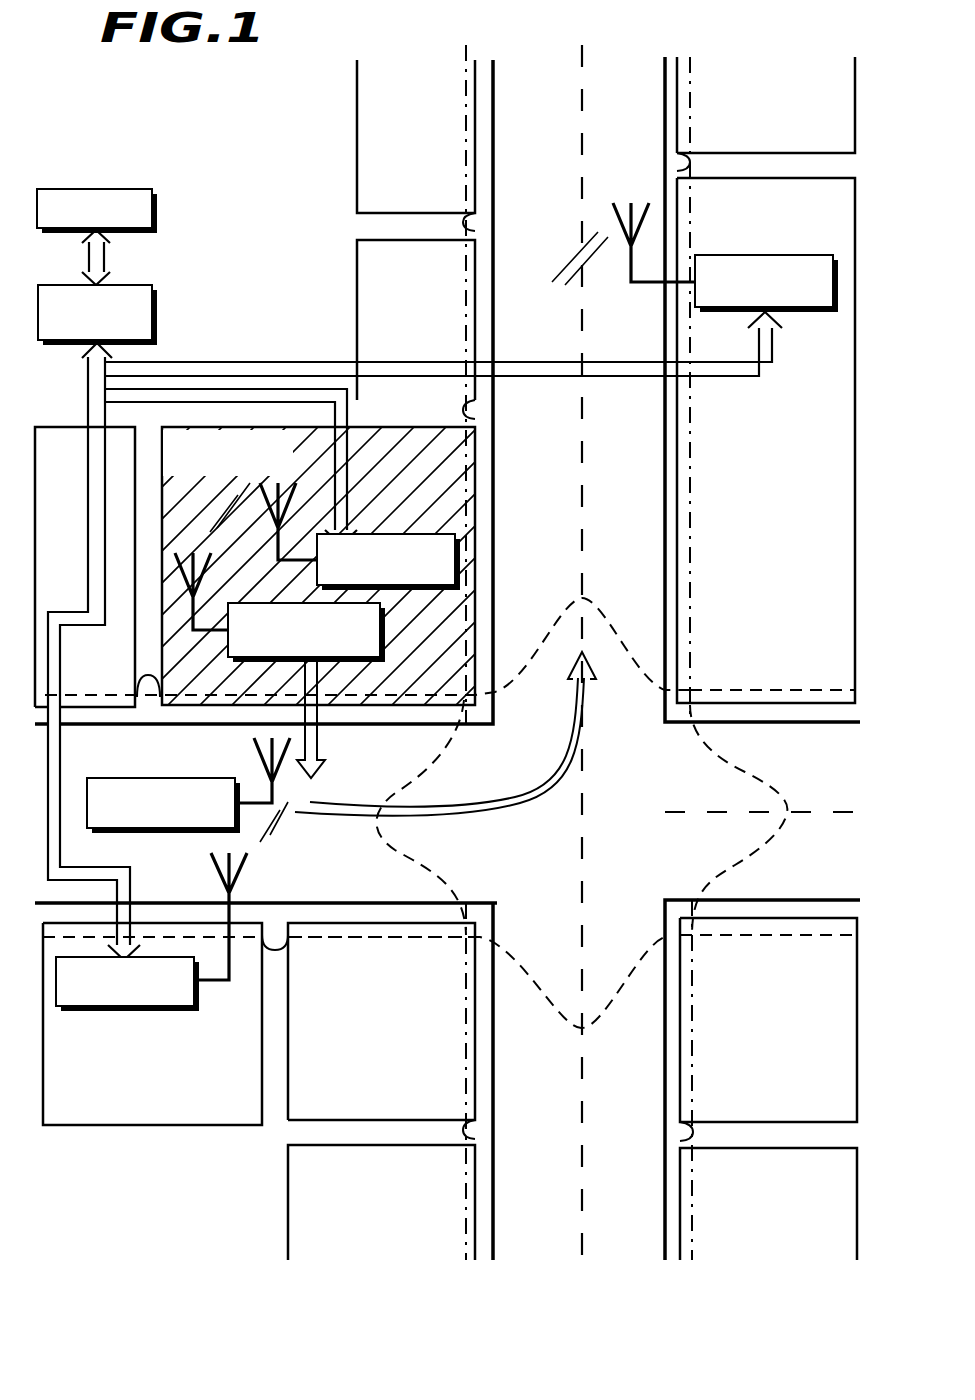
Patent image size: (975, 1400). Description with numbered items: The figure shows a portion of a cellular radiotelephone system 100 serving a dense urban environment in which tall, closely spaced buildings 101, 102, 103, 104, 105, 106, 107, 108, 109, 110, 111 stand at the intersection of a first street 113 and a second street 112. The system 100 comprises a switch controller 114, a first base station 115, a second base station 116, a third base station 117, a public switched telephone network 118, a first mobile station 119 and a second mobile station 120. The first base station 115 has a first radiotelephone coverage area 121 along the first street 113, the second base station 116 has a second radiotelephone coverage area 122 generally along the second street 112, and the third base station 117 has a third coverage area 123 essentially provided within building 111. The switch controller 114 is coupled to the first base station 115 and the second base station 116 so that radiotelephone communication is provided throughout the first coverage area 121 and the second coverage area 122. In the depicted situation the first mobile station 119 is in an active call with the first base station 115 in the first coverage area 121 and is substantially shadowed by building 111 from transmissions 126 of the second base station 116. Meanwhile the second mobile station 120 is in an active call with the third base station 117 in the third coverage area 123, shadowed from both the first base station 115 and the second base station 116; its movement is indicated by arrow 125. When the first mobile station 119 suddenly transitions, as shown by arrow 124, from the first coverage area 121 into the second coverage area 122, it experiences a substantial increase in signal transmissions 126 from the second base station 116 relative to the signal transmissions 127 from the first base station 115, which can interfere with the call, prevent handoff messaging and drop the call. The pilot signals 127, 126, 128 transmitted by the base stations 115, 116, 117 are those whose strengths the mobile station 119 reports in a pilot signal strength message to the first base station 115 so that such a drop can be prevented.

The cellular radiotelephone system 100 is at (186, 98).
The building 101 is at (143, 1128).
The building 102 is at (288, 1128).
The building 103 is at (288, 1210).
The building 104 is at (680, 1212).
The building 105 is at (680, 1070).
The building 106 is at (677, 563).
The building 107 is at (728, 80).
The building 108 is at (357, 159).
The building 109 is at (357, 281).
The building 110 is at (65, 427).
The building 111 is at (162, 448).
The second street 112 is at (583, 98).
The first street 113 is at (795, 760).
The switch controller 114 is at (157, 312).
The first base station 115 is at (133, 1010).
The second base station 116 is at (762, 254).
The third base station 117 is at (413, 528).
The public switched telephone network 118 is at (157, 212).
The first mobile station 119 is at (153, 778).
The second mobile station 120 is at (383, 628).
The first radiotelephone coverage area 121 is at (372, 862).
The second radiotelephone coverage area 122 is at (568, 470).
The third coverage area 123 is at (253, 445).
The arrow 124 is at (488, 808).
The direction of travel of mobile station No. 2 125 is at (320, 751).
The signal transmissions 126 is at (578, 246).
The signal transmissions 127 is at (283, 822).
The pilot signal 128 is at (228, 512).